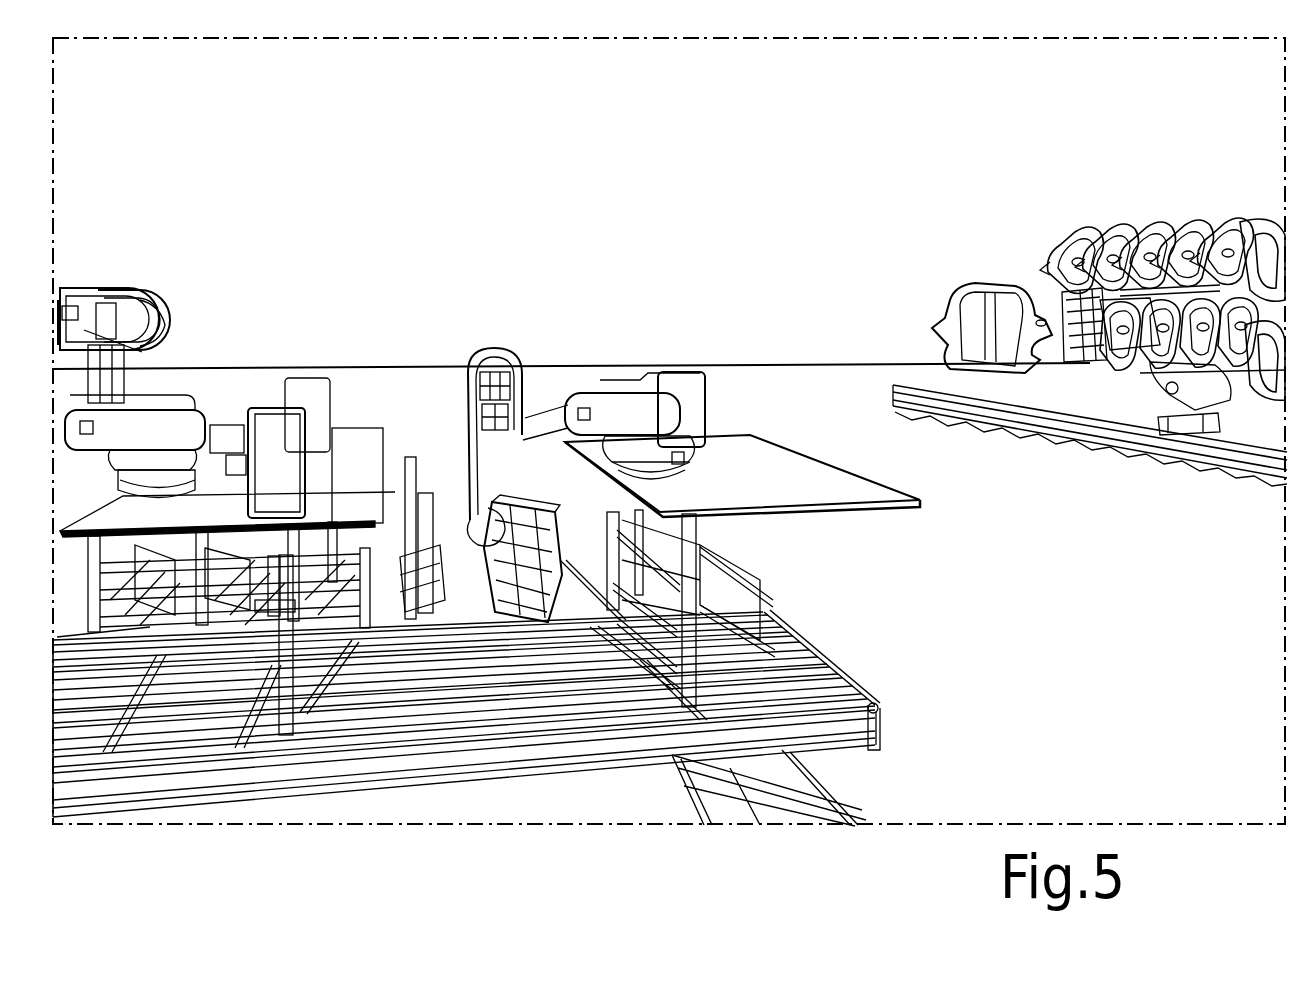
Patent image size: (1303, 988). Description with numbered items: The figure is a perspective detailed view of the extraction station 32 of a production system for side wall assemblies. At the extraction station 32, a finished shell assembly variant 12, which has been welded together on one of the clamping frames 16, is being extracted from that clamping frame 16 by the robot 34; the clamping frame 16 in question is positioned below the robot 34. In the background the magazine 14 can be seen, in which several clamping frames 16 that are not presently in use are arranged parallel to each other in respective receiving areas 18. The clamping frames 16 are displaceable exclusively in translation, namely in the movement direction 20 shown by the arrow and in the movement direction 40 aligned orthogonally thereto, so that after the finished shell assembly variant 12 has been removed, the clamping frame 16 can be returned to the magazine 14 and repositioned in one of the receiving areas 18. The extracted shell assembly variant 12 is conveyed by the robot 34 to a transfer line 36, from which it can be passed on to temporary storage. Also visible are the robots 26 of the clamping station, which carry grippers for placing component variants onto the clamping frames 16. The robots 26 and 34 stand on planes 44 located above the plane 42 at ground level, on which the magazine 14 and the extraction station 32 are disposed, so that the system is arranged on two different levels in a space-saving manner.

The shell assembly variant 12 is at (983, 280).
The magazine 14 is at (420, 366).
The clamping frame 16 is at (407, 463).
The receiving area 18 is at (455, 563).
The movement direction 20 is at (745, 545).
The robot 26 is at (68, 300).
The extraction station 32 is at (717, 315).
The robot 34 is at (632, 408).
The transfer line 36 is at (1120, 465).
The movement direction 40 is at (968, 697).
The plane 42 is at (1158, 625).
The plane 44 is at (235, 430).